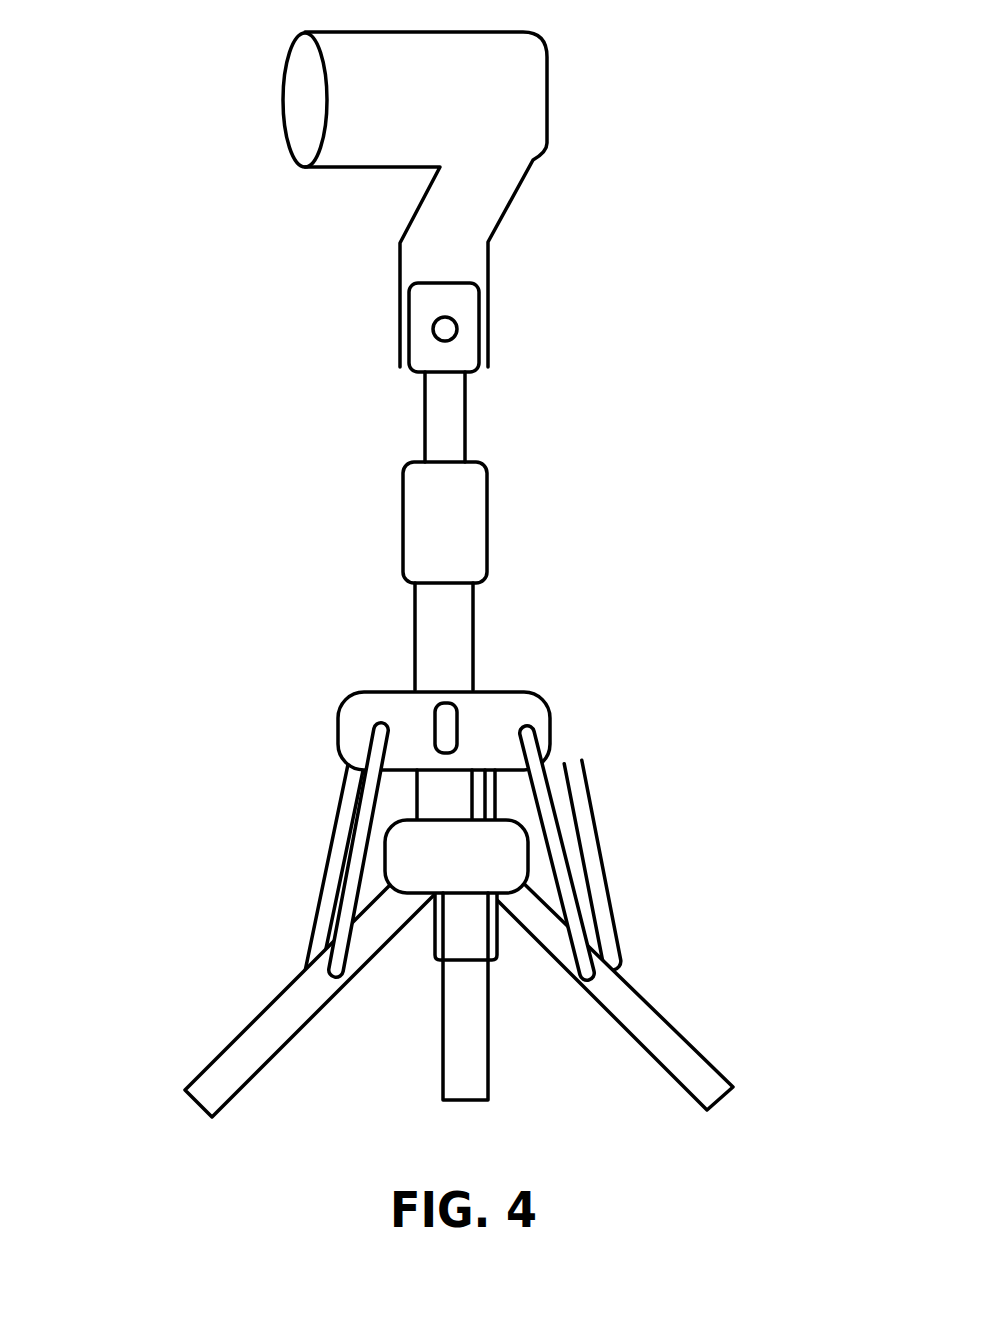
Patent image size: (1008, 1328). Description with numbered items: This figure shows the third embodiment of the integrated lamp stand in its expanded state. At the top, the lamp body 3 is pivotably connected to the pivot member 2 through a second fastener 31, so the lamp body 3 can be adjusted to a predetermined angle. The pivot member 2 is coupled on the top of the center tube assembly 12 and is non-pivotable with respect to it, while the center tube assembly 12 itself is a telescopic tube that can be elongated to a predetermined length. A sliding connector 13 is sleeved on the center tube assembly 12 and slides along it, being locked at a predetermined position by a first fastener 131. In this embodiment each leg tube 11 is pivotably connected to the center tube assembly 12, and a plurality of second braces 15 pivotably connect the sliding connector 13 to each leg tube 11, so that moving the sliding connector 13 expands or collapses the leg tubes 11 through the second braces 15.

The lamp body 3 is at (547, 110).
The pivot member 2 is at (479, 329).
The second fastener 31 is at (433, 329).
The center tube assembly 12 is at (473, 625).
The sliding connector 13 is at (338, 719).
The first fastener 131 is at (447, 722).
The second brace 15 is at (596, 832).
The leg tube 11 is at (250, 1023).